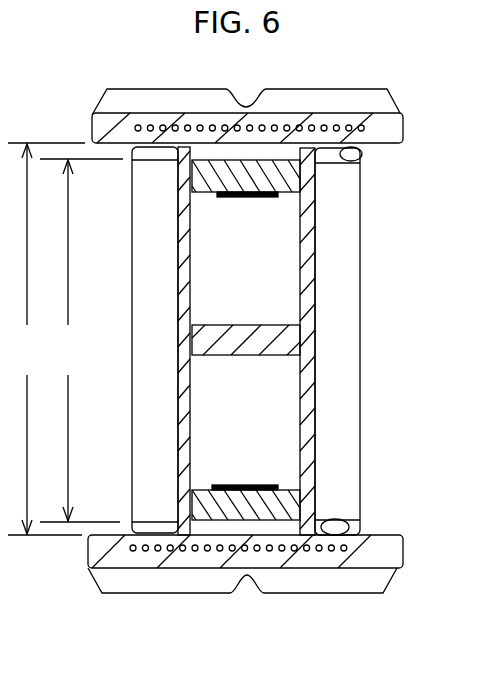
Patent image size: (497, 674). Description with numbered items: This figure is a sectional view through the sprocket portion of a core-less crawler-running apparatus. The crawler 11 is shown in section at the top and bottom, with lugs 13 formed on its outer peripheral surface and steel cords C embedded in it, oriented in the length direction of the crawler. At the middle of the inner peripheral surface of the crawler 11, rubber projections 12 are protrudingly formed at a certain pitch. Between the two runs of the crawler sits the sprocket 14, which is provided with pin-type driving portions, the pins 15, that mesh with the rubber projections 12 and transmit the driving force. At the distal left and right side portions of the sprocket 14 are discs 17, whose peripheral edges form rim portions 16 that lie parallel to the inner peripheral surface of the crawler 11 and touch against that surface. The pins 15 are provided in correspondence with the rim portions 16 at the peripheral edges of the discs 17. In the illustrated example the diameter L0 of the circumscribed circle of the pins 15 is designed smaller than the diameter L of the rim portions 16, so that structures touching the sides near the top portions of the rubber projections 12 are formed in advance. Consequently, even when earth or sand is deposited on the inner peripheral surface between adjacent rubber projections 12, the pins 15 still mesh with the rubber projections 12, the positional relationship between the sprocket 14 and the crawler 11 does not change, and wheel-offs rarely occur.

The crawler 11 is at (150, 128).
The rubber projections 12 is at (250, 198).
The lugs 13 is at (203, 100).
The sprocket 14 is at (264, 309).
The pin-type driving portions 15 is at (253, 170).
The rim portions 16 is at (354, 163).
The discs 17 is at (182, 258).
The steel cords C is at (268, 551).
The diameter of the rim portions L is at (46, 339).
The diameter of circumscribed circle of the pins L0 is at (81, 340).